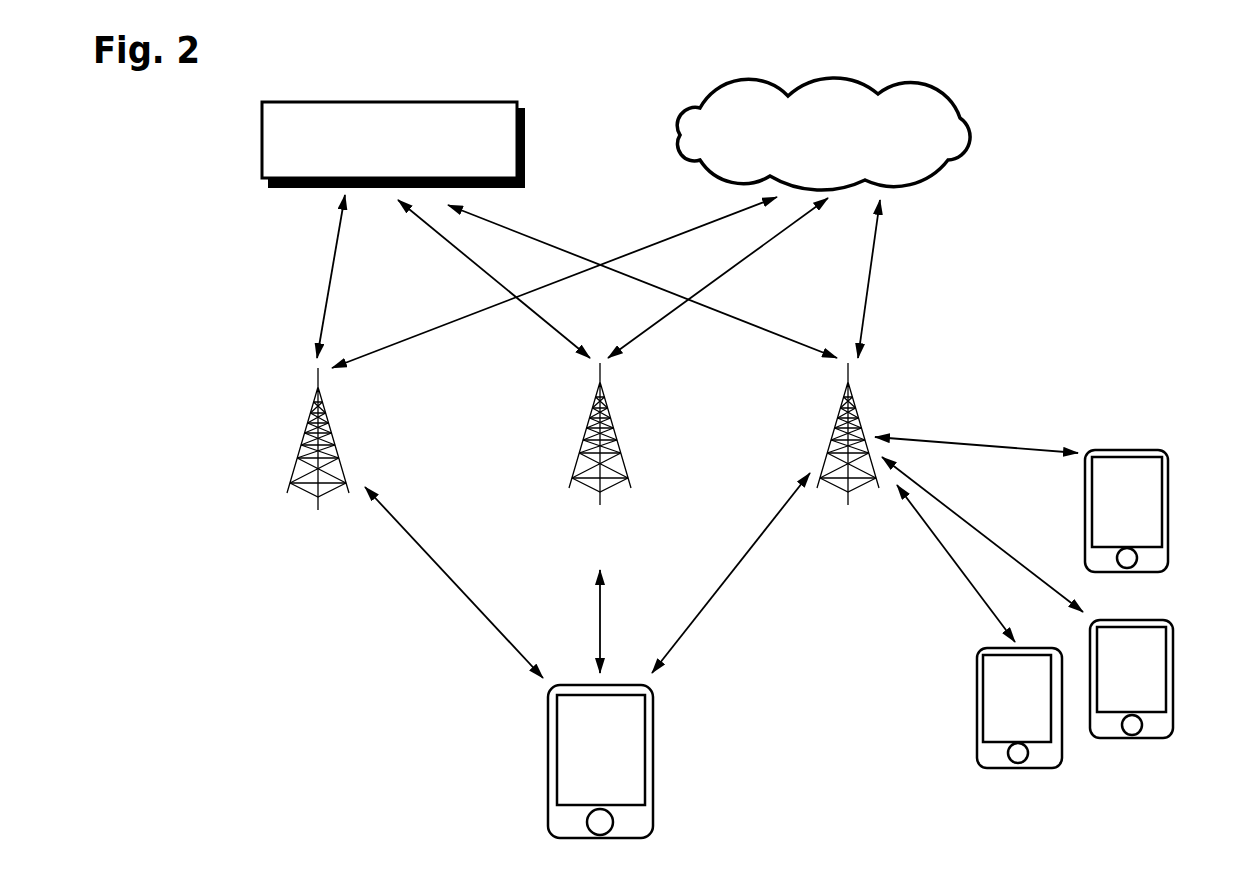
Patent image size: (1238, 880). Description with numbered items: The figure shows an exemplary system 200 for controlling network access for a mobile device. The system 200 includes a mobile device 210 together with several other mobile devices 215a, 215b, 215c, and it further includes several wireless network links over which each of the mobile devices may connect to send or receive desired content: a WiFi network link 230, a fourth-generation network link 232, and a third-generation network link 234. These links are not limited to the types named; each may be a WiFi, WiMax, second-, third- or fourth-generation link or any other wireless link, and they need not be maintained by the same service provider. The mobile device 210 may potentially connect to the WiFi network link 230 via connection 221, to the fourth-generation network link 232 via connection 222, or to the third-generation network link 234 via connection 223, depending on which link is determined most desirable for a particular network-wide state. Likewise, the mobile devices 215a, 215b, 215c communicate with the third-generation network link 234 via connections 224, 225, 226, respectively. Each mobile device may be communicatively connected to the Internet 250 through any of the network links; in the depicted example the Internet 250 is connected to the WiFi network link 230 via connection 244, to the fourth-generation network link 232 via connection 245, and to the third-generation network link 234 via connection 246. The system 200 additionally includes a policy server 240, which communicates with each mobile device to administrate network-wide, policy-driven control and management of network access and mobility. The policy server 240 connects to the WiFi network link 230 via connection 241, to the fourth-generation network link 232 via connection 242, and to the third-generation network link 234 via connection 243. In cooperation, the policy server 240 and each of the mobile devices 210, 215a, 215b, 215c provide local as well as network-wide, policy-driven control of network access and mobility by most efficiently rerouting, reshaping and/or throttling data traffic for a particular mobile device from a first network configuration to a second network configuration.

The system 200 is at (1080, 126).
The mobile device 210 is at (546, 759).
The mobile device 215a is at (1058, 766).
The mobile device 215b is at (1172, 738).
The mobile device 215c is at (1168, 572).
The connection 221 is at (447, 574).
The connection 222 is at (599, 622).
The connection 223 is at (727, 578).
The connection 224 is at (968, 586).
The connection 225 is at (997, 545).
The connection 226 is at (985, 446).
The WiFi network link 230 is at (320, 463).
The 4G network link 232 is at (600, 461).
The 3G network link 234 is at (850, 461).
The policy server 240 is at (393, 145).
The connection 241 is at (329, 272).
The connection 242 is at (454, 246).
The connection 243 is at (517, 229).
The connection 244 is at (684, 230).
The connection 245 is at (768, 240).
The connection 246 is at (872, 270).
The Internet 250 is at (823, 134).